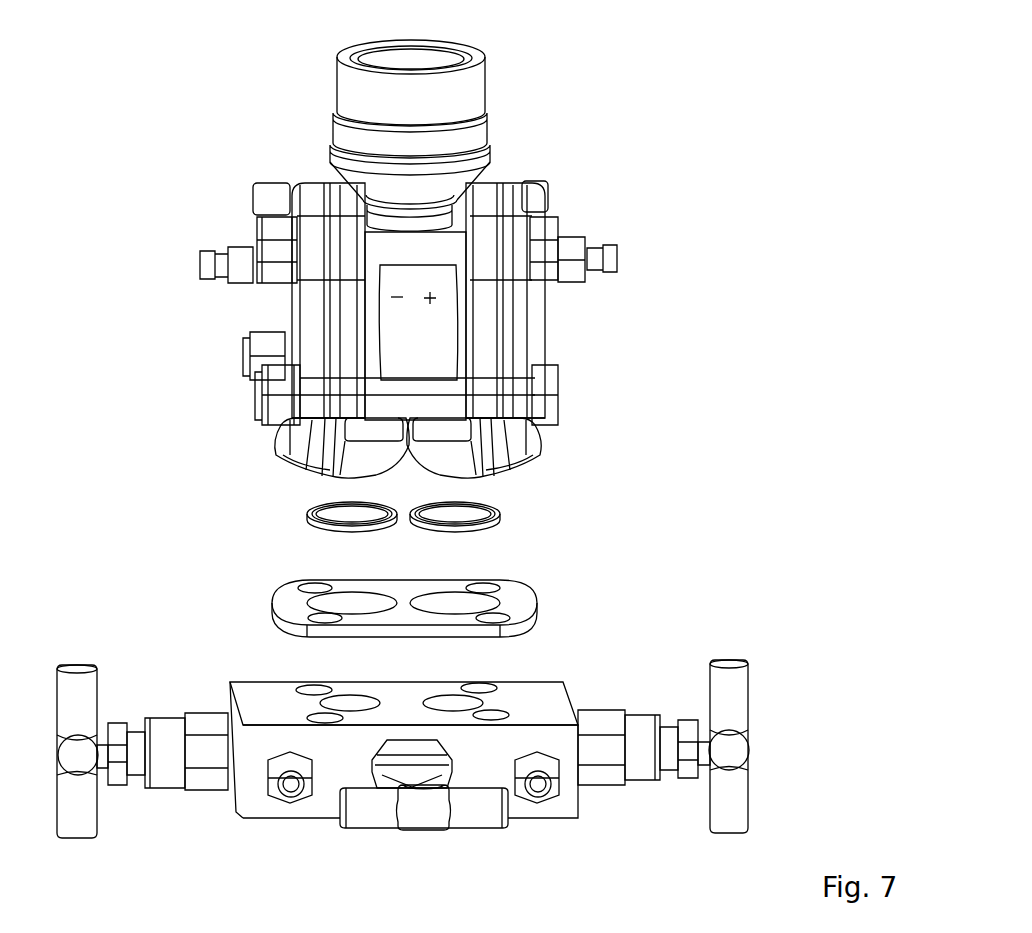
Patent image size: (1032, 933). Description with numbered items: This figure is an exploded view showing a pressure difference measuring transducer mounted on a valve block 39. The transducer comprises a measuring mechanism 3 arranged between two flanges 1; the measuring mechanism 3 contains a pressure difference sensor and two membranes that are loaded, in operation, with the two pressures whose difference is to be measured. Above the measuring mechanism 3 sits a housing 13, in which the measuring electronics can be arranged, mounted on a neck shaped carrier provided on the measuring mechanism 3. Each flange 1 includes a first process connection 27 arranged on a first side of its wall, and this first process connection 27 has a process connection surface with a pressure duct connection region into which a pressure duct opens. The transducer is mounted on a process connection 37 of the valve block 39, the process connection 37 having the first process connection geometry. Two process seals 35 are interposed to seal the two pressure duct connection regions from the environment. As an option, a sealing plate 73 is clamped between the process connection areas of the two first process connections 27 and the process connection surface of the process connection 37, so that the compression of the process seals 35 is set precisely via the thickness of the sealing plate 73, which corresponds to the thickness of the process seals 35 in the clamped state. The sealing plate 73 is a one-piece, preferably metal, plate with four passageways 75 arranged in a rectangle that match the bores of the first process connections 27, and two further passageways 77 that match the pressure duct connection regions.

The flange 1 is at (318, 338).
The measuring mechanism 3 is at (413, 335).
The housing 13 is at (478, 83).
The first process connection 27 is at (320, 465).
The process seal 35 is at (310, 522).
The process connection 37 is at (258, 705).
The valve block 39 is at (325, 805).
The sealing plate 73 is at (400, 613).
The passageway 75 is at (305, 590).
The further passageway 77 is at (358, 610).